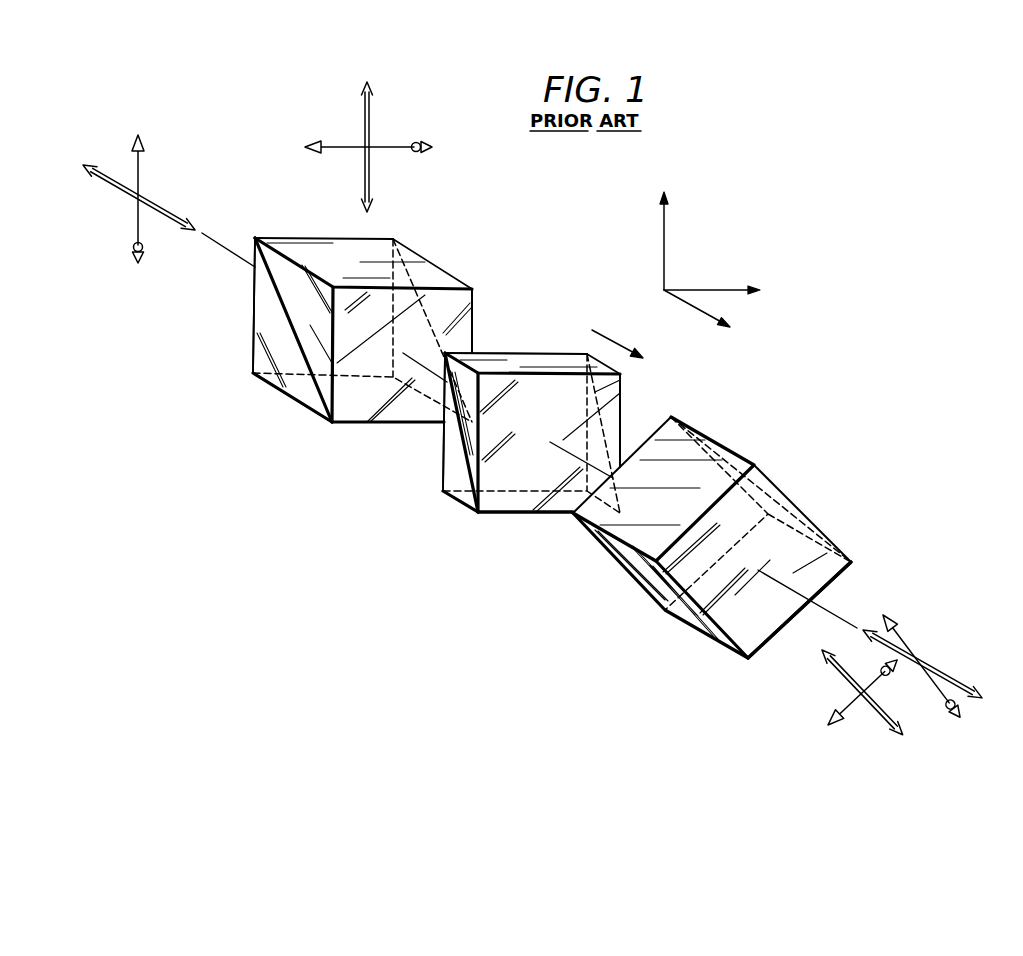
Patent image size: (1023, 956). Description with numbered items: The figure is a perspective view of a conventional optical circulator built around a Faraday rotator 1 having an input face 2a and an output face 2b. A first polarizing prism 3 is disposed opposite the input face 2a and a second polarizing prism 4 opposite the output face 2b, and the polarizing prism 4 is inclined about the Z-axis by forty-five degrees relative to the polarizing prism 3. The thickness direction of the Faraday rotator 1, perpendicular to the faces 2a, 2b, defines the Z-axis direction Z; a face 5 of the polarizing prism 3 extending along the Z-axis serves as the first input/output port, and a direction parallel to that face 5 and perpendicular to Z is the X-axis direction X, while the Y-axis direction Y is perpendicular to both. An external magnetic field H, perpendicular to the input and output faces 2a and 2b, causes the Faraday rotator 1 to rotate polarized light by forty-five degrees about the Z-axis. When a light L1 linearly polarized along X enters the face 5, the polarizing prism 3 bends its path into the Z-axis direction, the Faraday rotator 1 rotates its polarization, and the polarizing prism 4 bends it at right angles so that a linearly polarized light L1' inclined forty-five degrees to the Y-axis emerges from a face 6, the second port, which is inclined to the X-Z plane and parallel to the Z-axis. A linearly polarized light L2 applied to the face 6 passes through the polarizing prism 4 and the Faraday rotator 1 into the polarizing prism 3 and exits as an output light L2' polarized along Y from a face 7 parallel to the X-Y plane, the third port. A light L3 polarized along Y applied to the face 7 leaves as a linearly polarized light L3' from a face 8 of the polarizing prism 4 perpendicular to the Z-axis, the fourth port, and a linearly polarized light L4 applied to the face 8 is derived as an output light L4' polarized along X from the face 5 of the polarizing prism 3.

The Faraday rotator 1 is at (556, 353).
The input face 2a is at (466, 468).
The output face 2b is at (512, 470).
The polarizing prism 3 is at (287, 237).
The polarizing prism 4 is at (683, 425).
The face 5 is at (472, 242).
The face 6 is at (740, 616).
The face 7 is at (272, 327).
The face 8 is at (783, 545).
The external magnetic field H is at (617, 337).
The X-axis direction X is at (723, 294).
The Y-axis direction Y is at (663, 227).
The Z-axis direction Z is at (708, 319).
The light L1 is at (368, 177).
The linearly polarized light L1' is at (862, 712).
The linearly polarized light L2 is at (844, 692).
The output light L2' is at (139, 179).
The light L3 is at (167, 199).
The linearly polarized light L3' is at (941, 665).
The linearly polarized light L4 is at (922, 635).
The output light L4' is at (395, 147).